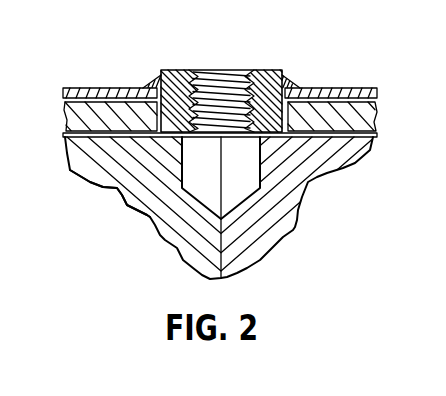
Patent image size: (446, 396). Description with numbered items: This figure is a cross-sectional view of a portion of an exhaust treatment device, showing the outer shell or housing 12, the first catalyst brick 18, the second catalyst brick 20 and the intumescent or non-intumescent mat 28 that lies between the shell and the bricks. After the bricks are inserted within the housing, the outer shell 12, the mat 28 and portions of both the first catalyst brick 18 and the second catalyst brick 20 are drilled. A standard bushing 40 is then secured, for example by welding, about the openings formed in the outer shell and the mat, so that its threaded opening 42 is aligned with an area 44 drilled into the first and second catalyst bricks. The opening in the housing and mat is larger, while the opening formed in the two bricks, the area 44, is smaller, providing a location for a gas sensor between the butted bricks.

The outer shell 12 is at (92, 93).
The first catalyst brick 18 is at (150, 198).
The second catalyst brick 20 is at (290, 183).
The intumescent or non-intumescent mat 28 is at (114, 124).
The bushing 40 is at (285, 64).
The threaded opening 42 is at (247, 93).
The area 44 is at (243, 158).